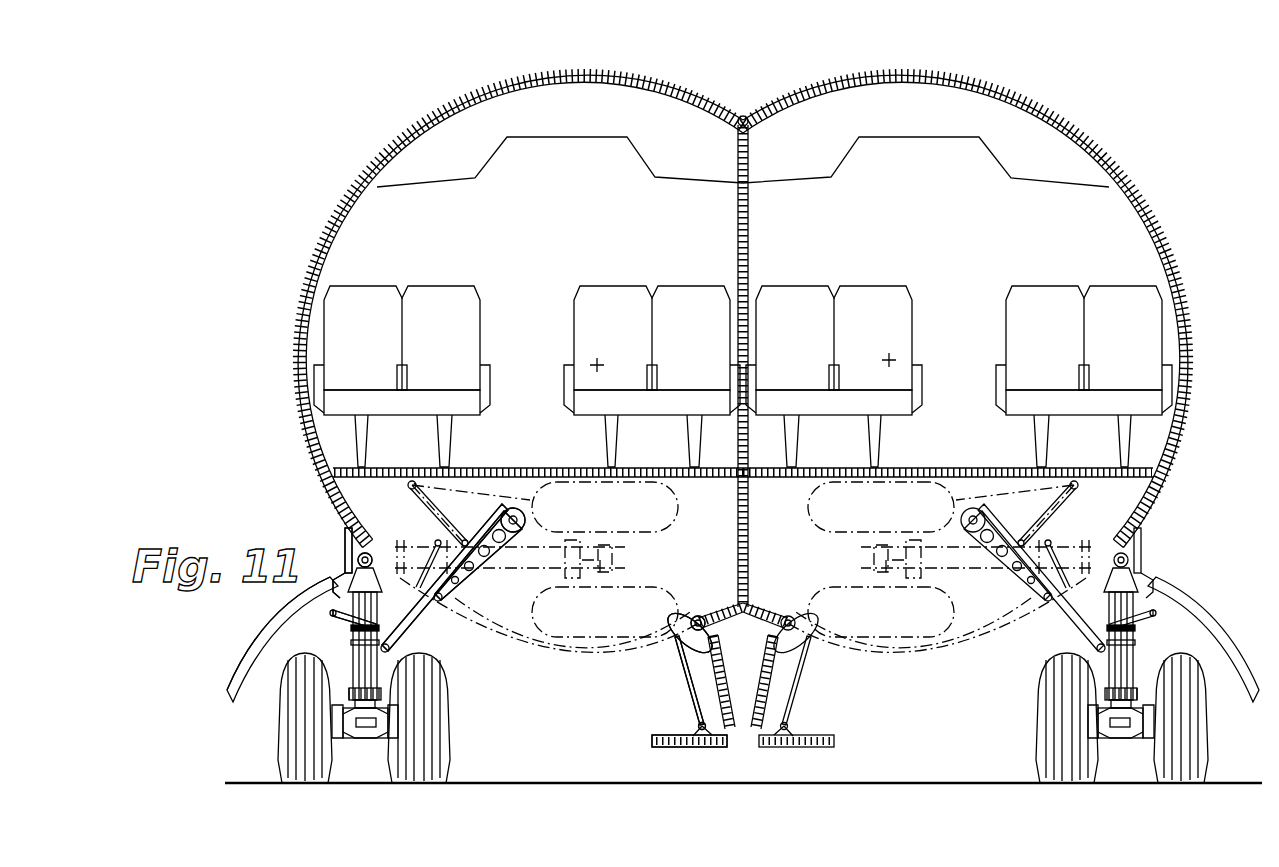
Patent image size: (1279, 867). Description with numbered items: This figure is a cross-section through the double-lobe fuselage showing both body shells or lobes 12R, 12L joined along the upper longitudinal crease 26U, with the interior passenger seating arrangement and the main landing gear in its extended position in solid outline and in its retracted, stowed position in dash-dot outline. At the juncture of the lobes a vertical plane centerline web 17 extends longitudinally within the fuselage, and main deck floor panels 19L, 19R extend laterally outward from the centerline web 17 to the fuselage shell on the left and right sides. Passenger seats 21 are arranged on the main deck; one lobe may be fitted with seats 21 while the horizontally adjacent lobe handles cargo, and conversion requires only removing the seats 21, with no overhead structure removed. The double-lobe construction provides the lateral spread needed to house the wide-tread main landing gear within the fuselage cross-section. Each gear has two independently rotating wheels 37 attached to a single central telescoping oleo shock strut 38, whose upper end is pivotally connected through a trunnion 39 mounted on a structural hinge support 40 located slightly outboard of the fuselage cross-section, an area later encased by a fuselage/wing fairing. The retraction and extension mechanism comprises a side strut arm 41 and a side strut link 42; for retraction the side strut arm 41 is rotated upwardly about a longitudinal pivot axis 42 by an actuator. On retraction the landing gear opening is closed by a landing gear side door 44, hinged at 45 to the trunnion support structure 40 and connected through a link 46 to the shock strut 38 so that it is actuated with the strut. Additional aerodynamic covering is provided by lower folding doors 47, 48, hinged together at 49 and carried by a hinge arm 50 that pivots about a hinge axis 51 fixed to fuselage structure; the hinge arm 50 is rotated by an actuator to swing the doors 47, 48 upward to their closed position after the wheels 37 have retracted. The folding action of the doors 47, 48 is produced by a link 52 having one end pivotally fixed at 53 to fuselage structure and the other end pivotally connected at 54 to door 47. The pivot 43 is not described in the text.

The right body shell lobe 12R is at (350, 210).
The left body shell lobe 12L is at (1140, 235).
The upper longitudinal crease 26U is at (751, 104).
The centerline web 17 is at (750, 212).
The right main deck floor panel 19R is at (520, 466).
The left main deck floor panel 19L is at (962, 466).
The passenger seats 21 is at (430, 287).
The main landing gear wheels 37 is at (278, 735).
The telescoping oleo shock strut 38 is at (378, 605).
The trunnion 39 is at (372, 555).
The structural hinge support 40 is at (345, 540).
The side strut arm 41 is at (466, 580).
The side strut link 42 is at (412, 628).
The brace pivot 43 is at (525, 503).
The landing gear side door 44 is at (270, 645).
The door hinge 45 is at (338, 568).
The door link 46 is at (345, 628).
The landing gear lower folding door 47 is at (650, 748).
The landing gear lower folding door 48 is at (740, 672).
The door hinge 49 is at (757, 745).
The hinge arm 50 is at (672, 645).
The hinge axis 51 is at (712, 618).
The folding link 52 is at (685, 685).
The link pivot on fuselage 53 is at (660, 614).
The link pivot on door 54 is at (690, 722).